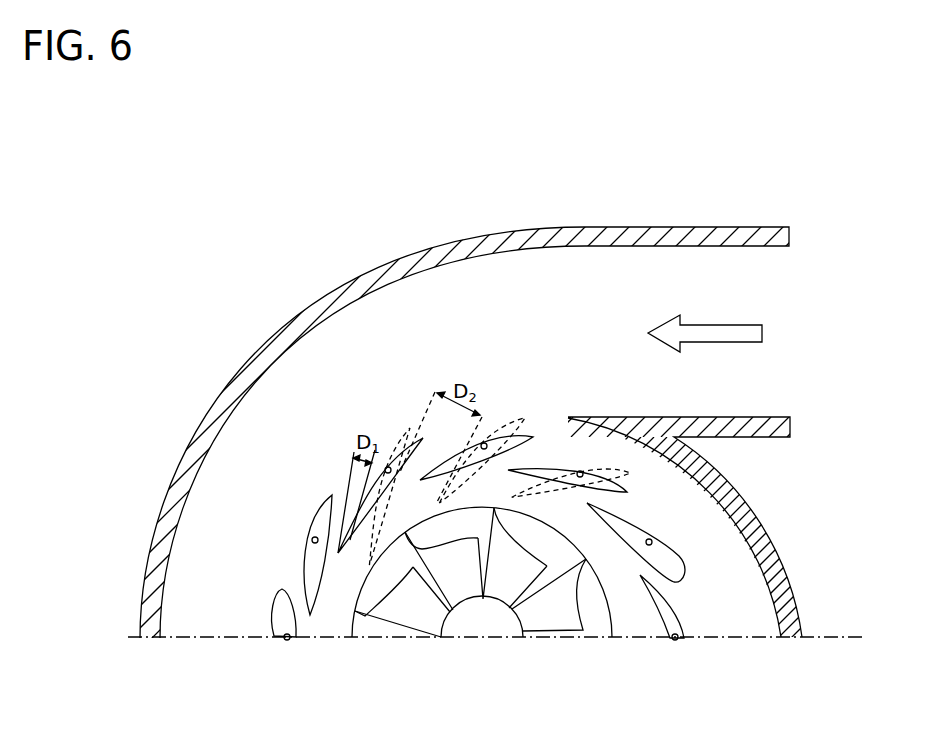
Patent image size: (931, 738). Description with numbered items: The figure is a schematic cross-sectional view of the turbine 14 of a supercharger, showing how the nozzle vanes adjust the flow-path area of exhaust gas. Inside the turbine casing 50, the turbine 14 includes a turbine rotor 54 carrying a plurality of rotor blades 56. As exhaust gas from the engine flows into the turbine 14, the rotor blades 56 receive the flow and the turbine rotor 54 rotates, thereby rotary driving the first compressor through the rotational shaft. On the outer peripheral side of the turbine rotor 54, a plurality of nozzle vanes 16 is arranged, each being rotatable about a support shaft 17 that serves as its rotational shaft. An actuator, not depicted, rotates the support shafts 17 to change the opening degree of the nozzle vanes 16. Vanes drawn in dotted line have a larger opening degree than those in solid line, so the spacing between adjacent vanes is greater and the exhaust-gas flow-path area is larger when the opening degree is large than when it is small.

The turbine 14 is at (752, 200).
The turbine casing 50 is at (645, 227).
The turbine rotor 54 is at (493, 621).
The rotor blades 56 is at (557, 613).
The nozzle vanes 16 is at (680, 555).
The support shafts 17 is at (649, 542).